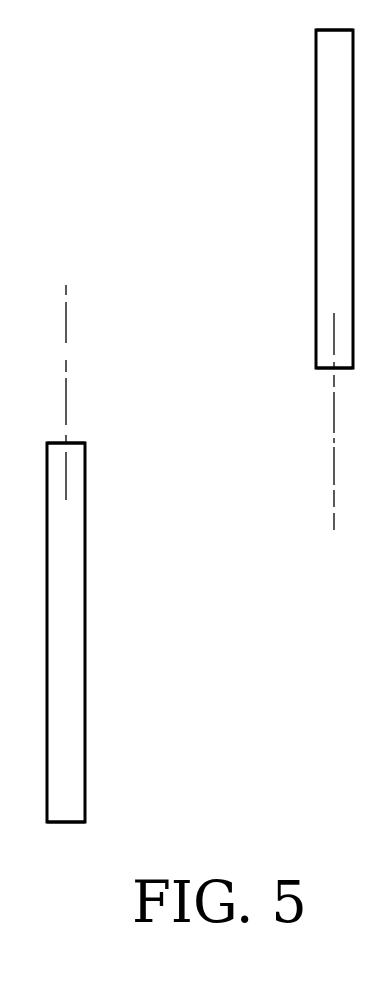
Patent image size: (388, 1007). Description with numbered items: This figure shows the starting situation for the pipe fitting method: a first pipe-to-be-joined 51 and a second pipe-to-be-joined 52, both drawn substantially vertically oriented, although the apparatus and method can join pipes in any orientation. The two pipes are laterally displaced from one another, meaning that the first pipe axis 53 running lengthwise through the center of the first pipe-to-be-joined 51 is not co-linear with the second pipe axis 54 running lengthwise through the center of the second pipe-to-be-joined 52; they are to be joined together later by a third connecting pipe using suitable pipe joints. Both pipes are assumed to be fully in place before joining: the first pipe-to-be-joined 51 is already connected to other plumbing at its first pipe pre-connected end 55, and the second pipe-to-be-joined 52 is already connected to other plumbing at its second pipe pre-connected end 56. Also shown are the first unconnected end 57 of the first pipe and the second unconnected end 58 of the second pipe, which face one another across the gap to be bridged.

The first pipe-to-be-joined 51 is at (65, 633).
The second pipe-to-be-joined 52 is at (335, 200).
The first pipe axis 53 is at (66, 333).
The second pipe axis 54 is at (333, 488).
The first pipe pre-connected end 55 is at (65, 823).
The second pipe pre-connected end 56 is at (333, 28).
The first unconnected end 57 is at (80, 442).
The second unconnected end 58 is at (322, 372).